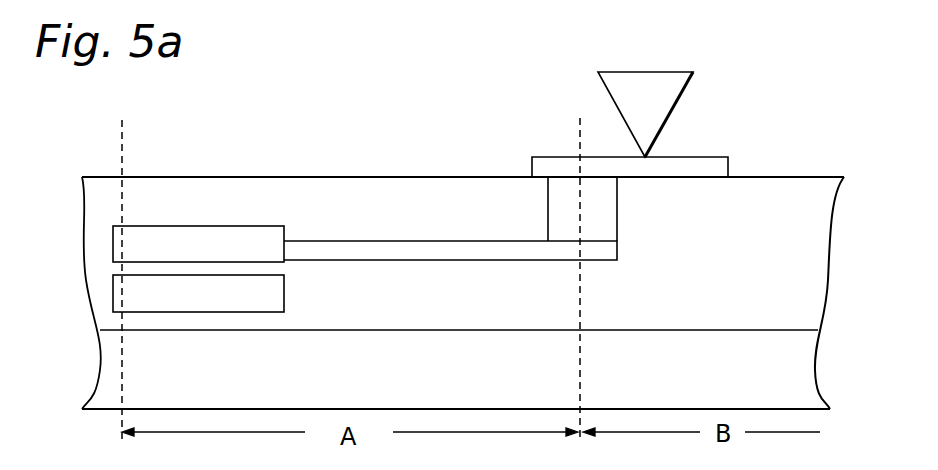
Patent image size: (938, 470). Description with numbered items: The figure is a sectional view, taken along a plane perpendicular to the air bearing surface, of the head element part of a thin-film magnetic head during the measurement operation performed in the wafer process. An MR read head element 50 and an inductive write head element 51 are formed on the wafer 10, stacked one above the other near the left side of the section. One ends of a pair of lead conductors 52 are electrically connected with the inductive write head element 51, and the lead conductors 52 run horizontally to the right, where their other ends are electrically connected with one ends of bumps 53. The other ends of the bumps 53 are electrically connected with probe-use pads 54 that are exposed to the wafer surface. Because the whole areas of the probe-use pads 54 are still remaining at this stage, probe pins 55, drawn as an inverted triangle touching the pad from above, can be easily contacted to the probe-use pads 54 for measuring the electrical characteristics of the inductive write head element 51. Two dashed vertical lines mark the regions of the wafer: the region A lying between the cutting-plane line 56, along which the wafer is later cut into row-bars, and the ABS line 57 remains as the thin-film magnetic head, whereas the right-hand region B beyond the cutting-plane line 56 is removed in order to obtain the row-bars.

The wafer 10 is at (792, 360).
The MR read head element 50 is at (133, 294).
The inductive write head element 51 is at (143, 246).
The lead conductors 52 is at (429, 252).
The bumps 53 is at (605, 210).
The probe-use pads 54 is at (690, 165).
The probe pins 55 is at (665, 96).
The cutting-plane line 56 is at (580, 138).
The ABS line 57 is at (122, 140).